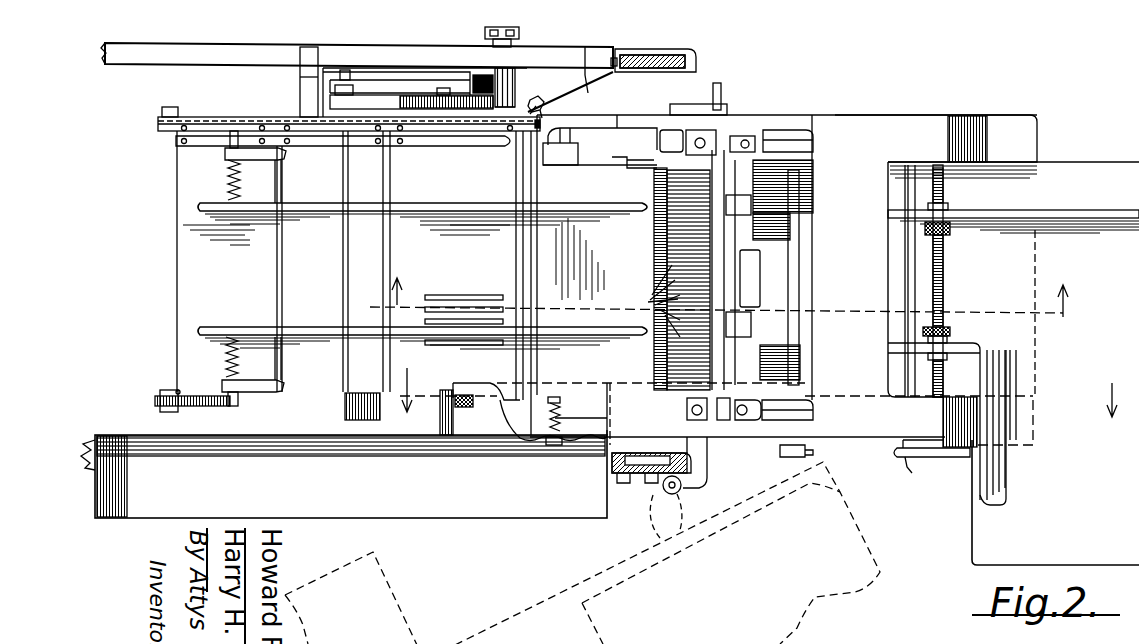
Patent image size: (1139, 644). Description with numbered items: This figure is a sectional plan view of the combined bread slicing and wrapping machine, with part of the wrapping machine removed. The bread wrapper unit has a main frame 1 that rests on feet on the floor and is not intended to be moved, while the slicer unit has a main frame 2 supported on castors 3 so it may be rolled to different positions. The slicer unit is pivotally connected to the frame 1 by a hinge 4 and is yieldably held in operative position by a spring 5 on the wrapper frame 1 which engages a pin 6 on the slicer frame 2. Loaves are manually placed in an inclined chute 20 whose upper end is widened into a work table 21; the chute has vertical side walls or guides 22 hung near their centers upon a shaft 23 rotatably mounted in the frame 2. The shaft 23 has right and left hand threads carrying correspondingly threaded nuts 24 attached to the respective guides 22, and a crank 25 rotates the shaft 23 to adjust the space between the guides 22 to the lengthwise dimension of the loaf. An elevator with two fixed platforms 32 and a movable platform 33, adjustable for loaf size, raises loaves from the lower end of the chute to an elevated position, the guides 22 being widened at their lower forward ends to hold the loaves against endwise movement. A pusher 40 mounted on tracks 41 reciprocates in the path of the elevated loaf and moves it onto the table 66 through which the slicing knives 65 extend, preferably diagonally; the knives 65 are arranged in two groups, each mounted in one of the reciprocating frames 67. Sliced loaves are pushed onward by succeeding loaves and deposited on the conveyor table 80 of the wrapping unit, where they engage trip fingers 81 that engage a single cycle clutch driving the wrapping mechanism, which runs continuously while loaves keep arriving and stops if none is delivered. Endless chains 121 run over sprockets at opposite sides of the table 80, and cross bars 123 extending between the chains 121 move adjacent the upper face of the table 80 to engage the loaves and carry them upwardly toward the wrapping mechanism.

The main frame of the bread wrapper unit 1 is at (602, 56).
The main frame of the slicer unit 2 is at (830, 118).
The castors 3 is at (724, 308).
The hinge 4 is at (701, 497).
The spring 5 is at (587, 90).
The pin 6 is at (540, 106).
The inclined chute 20 is at (995, 305).
The work table 21 is at (1102, 502).
The side walls or guides 22 is at (1005, 217).
The shaft 23 is at (945, 268).
The nuts 24 is at (946, 208).
The crank 25 is at (910, 470).
The fixed platforms 32 is at (748, 205).
The movable platform 33 is at (750, 272).
The pusher 40 is at (800, 230).
The tracks 41 is at (776, 138).
The slicing knives 65 is at (655, 292).
The table 66 is at (641, 261).
The frames 67 is at (653, 163).
The conveyor table 80 is at (195, 193).
The trip fingers 81 is at (478, 320).
The endless chains 121 is at (254, 118).
The cross bars 123 is at (343, 283).